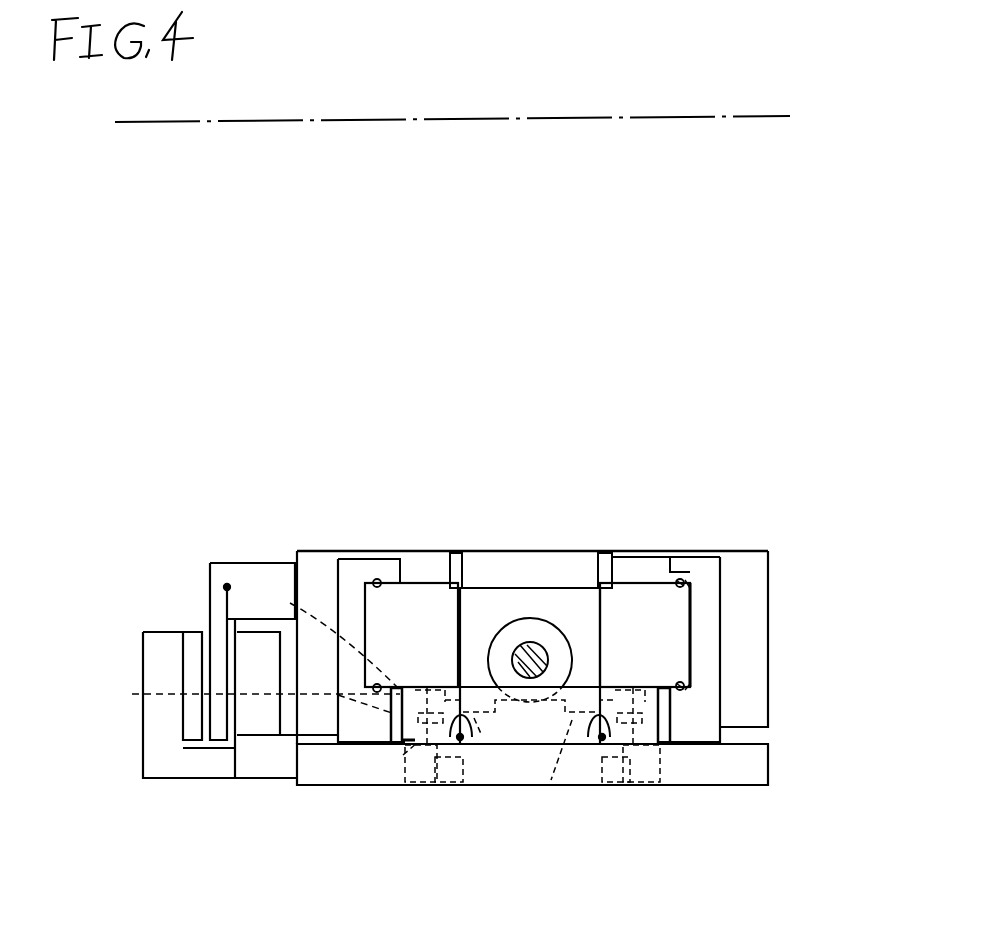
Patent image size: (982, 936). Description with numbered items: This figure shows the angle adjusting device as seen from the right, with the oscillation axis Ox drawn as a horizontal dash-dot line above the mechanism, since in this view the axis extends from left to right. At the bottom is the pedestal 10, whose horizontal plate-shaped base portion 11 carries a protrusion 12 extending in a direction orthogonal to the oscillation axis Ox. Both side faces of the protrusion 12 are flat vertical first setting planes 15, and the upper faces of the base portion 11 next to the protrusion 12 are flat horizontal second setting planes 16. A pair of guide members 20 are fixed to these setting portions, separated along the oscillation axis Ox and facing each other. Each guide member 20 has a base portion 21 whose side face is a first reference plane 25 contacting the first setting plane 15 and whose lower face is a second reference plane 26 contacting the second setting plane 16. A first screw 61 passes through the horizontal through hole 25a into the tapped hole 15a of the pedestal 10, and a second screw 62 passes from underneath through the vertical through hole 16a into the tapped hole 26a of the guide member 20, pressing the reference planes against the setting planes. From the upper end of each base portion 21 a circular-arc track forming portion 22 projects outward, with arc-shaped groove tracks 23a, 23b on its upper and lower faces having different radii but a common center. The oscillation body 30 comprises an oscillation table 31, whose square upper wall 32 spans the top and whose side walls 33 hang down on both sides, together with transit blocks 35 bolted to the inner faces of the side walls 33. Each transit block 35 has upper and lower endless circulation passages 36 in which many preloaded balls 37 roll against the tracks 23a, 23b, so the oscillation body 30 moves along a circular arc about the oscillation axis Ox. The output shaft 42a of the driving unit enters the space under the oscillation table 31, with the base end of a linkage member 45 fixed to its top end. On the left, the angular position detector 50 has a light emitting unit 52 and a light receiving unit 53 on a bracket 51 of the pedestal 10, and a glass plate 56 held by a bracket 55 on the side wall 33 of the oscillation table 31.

The pedestal 10 is at (762, 792).
The base portion 11 is at (762, 762).
The protrusion 12 is at (583, 682).
The first setting plane 15 is at (443, 698).
The tapped hole 15a is at (482, 736).
The second setting plane 16 is at (468, 720).
The vertical through hole 16a is at (403, 755).
The guide member 20 is at (425, 580).
The base portion 21 is at (450, 555).
The track forming portion 22 is at (379, 579).
The track 23a is at (678, 587).
The track 23b is at (680, 681).
The first reference plane 25 is at (530, 722).
The horizontal through hole 25a is at (316, 638).
The second reference plane 26 is at (433, 760).
The tapped hole 26a is at (237, 694).
The oscillation body 30 is at (555, 546).
The oscillation table 31 is at (513, 548).
The upper wall 32 is at (480, 550).
The side wall 33 is at (293, 587).
The transit block 35 is at (338, 700).
The endless circulation passage 36 is at (688, 578).
The ball 37 is at (693, 593).
The output shaft 42a is at (512, 655).
The linkage member 45 is at (503, 633).
The angular position detector 50 is at (200, 557).
The bracket 51 is at (253, 767).
The light emitting unit 52 is at (192, 627).
The light receiving unit 53 is at (260, 720).
The bracket 55 is at (247, 560).
The glass plate 56 is at (212, 597).
The screw 61 is at (476, 720).
The screw 62 is at (413, 778).
The oscillation axis Ox is at (531, 119).